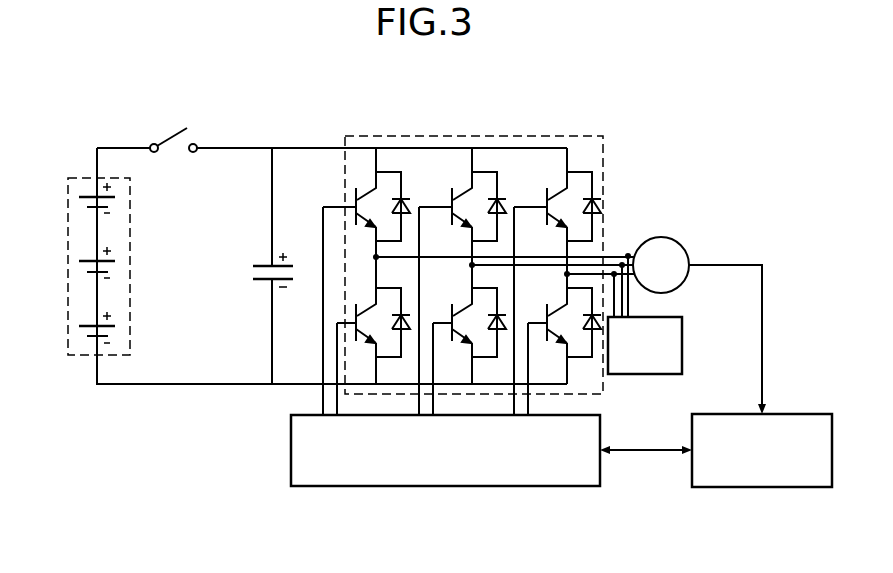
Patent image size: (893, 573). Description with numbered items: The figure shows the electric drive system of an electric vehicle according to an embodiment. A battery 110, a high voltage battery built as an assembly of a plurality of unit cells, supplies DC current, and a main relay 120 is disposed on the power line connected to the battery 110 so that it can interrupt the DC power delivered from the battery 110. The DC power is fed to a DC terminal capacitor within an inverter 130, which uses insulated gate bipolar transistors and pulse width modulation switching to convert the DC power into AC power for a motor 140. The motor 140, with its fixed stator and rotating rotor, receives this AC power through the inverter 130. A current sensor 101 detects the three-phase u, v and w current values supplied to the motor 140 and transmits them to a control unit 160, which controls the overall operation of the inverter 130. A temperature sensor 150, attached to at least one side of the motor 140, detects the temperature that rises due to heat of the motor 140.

The battery 110 is at (83, 176).
The main relay 120 is at (167, 132).
The inverter 130 is at (472, 136).
The motor 140 is at (659, 237).
The current sensor 101 is at (683, 344).
The control unit 160 is at (443, 487).
The temperature sensor 150 is at (762, 488).